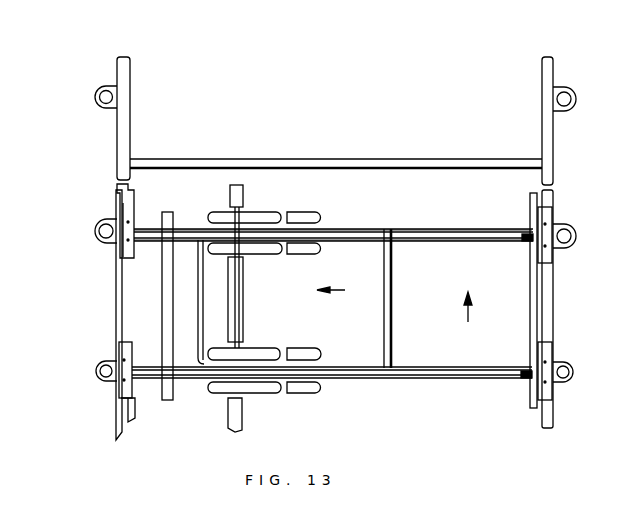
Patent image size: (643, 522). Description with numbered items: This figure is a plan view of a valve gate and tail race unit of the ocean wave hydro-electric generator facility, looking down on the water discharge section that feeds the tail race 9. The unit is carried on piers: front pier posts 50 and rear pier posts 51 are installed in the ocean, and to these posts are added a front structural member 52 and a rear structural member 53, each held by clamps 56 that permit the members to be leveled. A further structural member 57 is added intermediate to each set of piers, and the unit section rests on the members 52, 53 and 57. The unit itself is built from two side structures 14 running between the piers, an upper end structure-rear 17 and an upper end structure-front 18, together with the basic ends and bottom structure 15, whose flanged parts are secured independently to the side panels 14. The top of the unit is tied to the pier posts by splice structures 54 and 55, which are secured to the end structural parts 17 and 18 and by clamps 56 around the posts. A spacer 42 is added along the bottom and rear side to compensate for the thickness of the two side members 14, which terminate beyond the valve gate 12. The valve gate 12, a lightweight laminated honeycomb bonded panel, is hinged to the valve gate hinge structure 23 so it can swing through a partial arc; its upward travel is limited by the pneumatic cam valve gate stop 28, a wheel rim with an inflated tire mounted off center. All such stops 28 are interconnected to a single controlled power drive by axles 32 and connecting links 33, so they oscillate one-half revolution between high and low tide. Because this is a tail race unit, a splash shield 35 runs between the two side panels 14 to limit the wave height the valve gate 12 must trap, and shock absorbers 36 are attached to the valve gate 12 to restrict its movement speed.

The tail race 9 is at (424, 336).
The valve gate 12 is at (198, 312).
The side structure 14 is at (362, 230).
The basic ends and bottom structure 15 is at (530, 315).
The upper end structure-rear 17 is at (553, 300).
The upper end structure-front 18 is at (116, 298).
The valve gate hinge structure 23 is at (392, 300).
The pneumatic cam valve gate stop 28 is at (240, 212).
The axle 32 is at (243, 347).
The connecting link 33 is at (243, 297).
The splash shield 35 is at (162, 330).
The shock absorber 36 is at (305, 212).
The spacer 42 is at (440, 243).
The front pier post 50 is at (97, 107).
The rear pier post 51 is at (576, 96).
The front structural member 52 is at (130, 128).
The rear structural member 53 is at (555, 144).
The splice structure 54 is at (133, 398).
The splice structure 55 is at (538, 215).
The clamp 56 is at (96, 224).
The intermediate structural member 57 is at (335, 158).